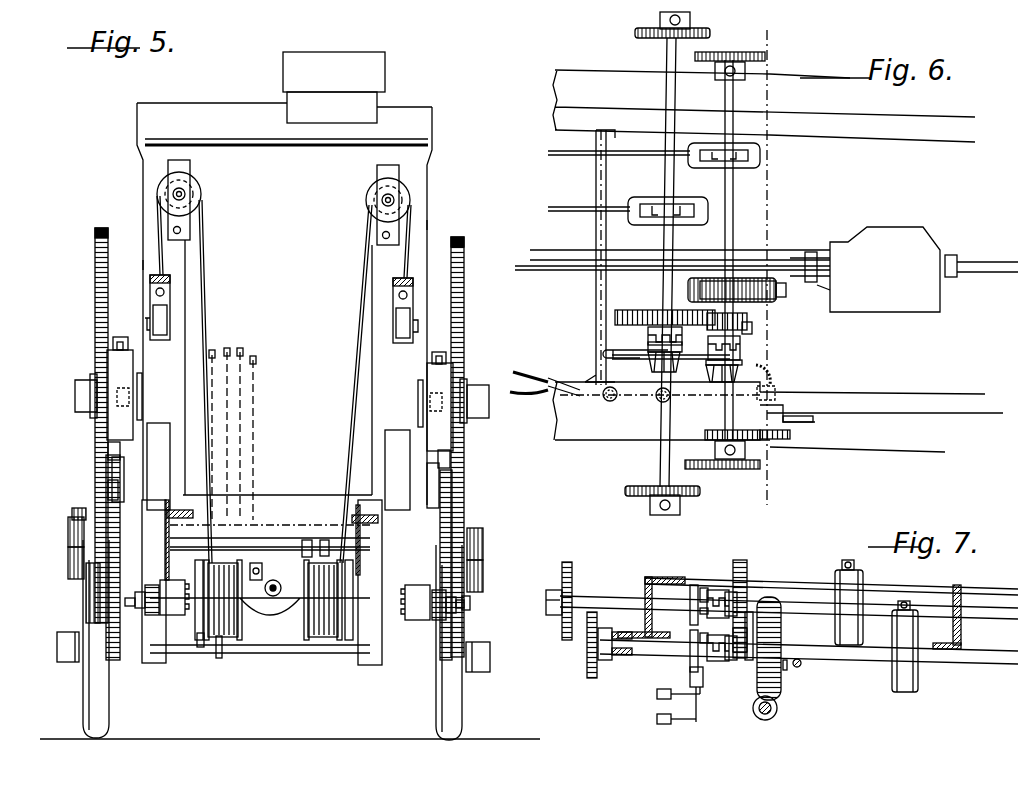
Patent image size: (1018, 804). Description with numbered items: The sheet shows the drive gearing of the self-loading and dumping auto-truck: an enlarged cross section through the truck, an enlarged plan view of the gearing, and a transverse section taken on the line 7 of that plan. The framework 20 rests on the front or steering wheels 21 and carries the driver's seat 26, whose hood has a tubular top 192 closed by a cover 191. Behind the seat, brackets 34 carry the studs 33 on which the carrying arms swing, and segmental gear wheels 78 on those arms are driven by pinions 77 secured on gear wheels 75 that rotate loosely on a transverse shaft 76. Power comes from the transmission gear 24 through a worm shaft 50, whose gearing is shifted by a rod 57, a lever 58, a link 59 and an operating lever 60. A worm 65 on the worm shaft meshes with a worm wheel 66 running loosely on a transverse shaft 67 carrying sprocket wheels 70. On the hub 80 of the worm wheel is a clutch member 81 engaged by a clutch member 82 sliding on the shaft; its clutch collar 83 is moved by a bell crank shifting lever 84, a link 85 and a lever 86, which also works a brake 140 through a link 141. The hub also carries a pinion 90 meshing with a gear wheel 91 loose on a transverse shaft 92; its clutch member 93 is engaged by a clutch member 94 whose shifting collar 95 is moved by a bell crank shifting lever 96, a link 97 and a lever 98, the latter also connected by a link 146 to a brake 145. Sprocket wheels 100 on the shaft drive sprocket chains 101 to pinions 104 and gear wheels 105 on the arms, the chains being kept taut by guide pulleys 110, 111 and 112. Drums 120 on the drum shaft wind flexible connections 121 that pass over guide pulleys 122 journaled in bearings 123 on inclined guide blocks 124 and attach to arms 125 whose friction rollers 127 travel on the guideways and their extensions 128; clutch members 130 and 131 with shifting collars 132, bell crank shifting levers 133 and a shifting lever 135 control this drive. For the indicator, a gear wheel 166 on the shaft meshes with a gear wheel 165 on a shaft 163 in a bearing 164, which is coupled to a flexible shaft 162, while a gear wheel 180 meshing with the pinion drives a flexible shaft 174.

In FIG. 6, the section line 7— 7 is at (755, 269).
In FIG. 5, the framework 20 is at (165, 541).
In FIG. 6, the framework 20 is at (866, 143).
In FIG. 7, the framework 20 is at (660, 578).
In FIG. 5, the front or steering wheels 21 is at (90, 685).
In FIG. 6, the transmission gear 24 is at (898, 228).
In FIG. 5, the driver's seat 26 is at (278, 320).
In FIG. 5, the studs 33 is at (118, 390).
In FIG. 5, the brackets 34 is at (142, 403).
In FIG. 6, the worm shaft 50 is at (790, 296).
In FIG. 7, the worm shaft 50 is at (765, 720).
In FIG. 6, the rod 57 is at (830, 300).
In FIG. 6, the lever 58 is at (816, 290).
In FIG. 5, the link 59 is at (262, 571).
In FIG. 6, the link 59 is at (549, 271).
In FIG. 7, the link 59 is at (785, 670).
In FIG. 5, the operating lever 60 is at (256, 376).
In FIG. 6, the worm 65 is at (734, 278).
In FIG. 7, the worm 65 is at (777, 708).
In FIG. 6, the worm wheel 66 is at (776, 300).
In FIG. 7, the worm wheel 66 is at (778, 600).
In FIG. 6, the transverse shaft 67 is at (733, 206).
In FIG. 7, the transverse shaft 67 is at (826, 652).
In FIG. 6, the sprocket wheels 70 is at (740, 56).
In FIG. 7, the sprocket wheels 70 is at (587, 662).
In FIG. 5, the gear wheels 75 is at (112, 660).
In FIG. 5, the transverse shaft 76 is at (265, 590).
In FIG. 5, the pinions 77 is at (88, 612).
In FIG. 5, the segmental gear wheels 78 is at (95, 270).
In FIG. 6, the hub 80 is at (747, 320).
In FIG. 7, the hub 80 is at (749, 662).
In FIG. 6, the clutch member 81 is at (740, 342).
In FIG. 7, the clutch member 81 is at (730, 660).
In FIG. 6, the clutch member 82 is at (742, 360).
In FIG. 7, the clutch member 82 is at (714, 661).
In FIG. 6, the clutch collar 83 is at (720, 380).
In FIG. 7, the clutch collar 83 is at (700, 648).
In FIG. 6, the bell crank shifting lever 84 is at (671, 367).
In FIG. 7, the bell crank shifting lever 84 is at (690, 632).
In FIG. 5, the link 85 is at (219, 660).
In FIG. 6, the link 85 is at (523, 372).
In FIG. 7, the link 85 is at (657, 720).
In FIG. 5, the lever 86 is at (229, 426).
In FIG. 6, the pinion 90 is at (752, 330).
In FIG. 7, the pinion 90 is at (742, 660).
In FIG. 6, the gear wheel 91 is at (640, 316).
In FIG. 7, the gear wheel 91 is at (742, 562).
In FIG. 6, the transverse shaft 92 is at (660, 242).
In FIG. 7, the transverse shaft 92 is at (626, 600).
In FIG. 6, the clutch member 93 is at (648, 338).
In FIG. 7, the clutch member 93 is at (731, 592).
In FIG. 6, the clutch member 94 is at (652, 356).
In FIG. 7, the clutch member 94 is at (716, 590).
In FIG. 6, the shifting collar 95 is at (668, 352).
In FIG. 7, the shifting collar 95 is at (690, 594).
In FIG. 6, the bell crank shifting lever 96 is at (607, 350).
In FIG. 7, the bell crank shifting lever 96 is at (702, 588).
In FIG. 5, the link 97 is at (200, 650).
In FIG. 6, the link 97 is at (525, 392).
In FIG. 7, the link 97 is at (657, 696).
In FIG. 5, the lever 98 is at (206, 427).
In FIG. 6, the sprocket wheels 100 is at (658, 30).
In FIG. 7, the sprocket wheels 100 is at (567, 562).
In FIG. 5, the sprocket chains 101 is at (118, 338).
In FIG. 5, the pinions 104 is at (68, 545).
In FIG. 5, the gear wheels 105 is at (68, 572).
In FIG. 5, the guide pulley 110 is at (110, 420).
In FIG. 5, the guide pulley 111 is at (107, 347).
In FIG. 5, the guide pulley 112 is at (124, 476).
In FIG. 5, the drums 120 is at (215, 604).
In FIG. 5, the flexible connections 121 is at (201, 294).
In FIG. 5, the guide pulleys 122 is at (201, 192).
In FIG. 5, the bearings 123 is at (190, 166).
In FIG. 5, the inclined guide blocks 124 is at (143, 264).
In FIG. 5, the arms 125 is at (150, 300).
In FIG. 5, the friction rollers 127 is at (160, 340).
In FIG. 5, the extensions 128 is at (167, 515).
In FIG. 6, the extensions 128 is at (613, 73).
In FIG. 5, the clutch members 130 is at (170, 616).
In FIG. 5, the clutch members 131 is at (146, 586).
In FIG. 5, the shifting collars 132 is at (130, 606).
In FIG. 5, the bell crank shifting levers 133 is at (140, 592).
In FIG. 5, the shifting lever 135 is at (253, 426).
In FIG. 6, the brake 140 is at (760, 158).
In FIG. 7, the brake 140 is at (918, 683).
In FIG. 5, the link 141 is at (330, 553).
In FIG. 6, the link 141 is at (558, 155).
In FIG. 6, the brake 145 is at (650, 200).
In FIG. 7, the brake 145 is at (855, 572).
In FIG. 5, the link 146 is at (302, 547).
In FIG. 6, the link 146 is at (558, 211).
In FIG. 6, the flexible shaft 162 is at (768, 377).
In FIG. 6, the shaft 163 is at (777, 391).
In FIG. 6, the bearing 164 is at (795, 419).
In FIG. 6, the gear wheel 165 is at (776, 441).
In FIG. 6, the gear wheel 166 is at (705, 438).
In FIG. 7, the gear wheel 166 is at (622, 660).
In FIG. 5, the flexible shaft 174 is at (106, 492).
In FIG. 5, the gear wheel 180 is at (72, 516).
In FIG. 5, the cover 191 is at (334, 72).
In FIG. 5, the tubular top 192 is at (332, 107).